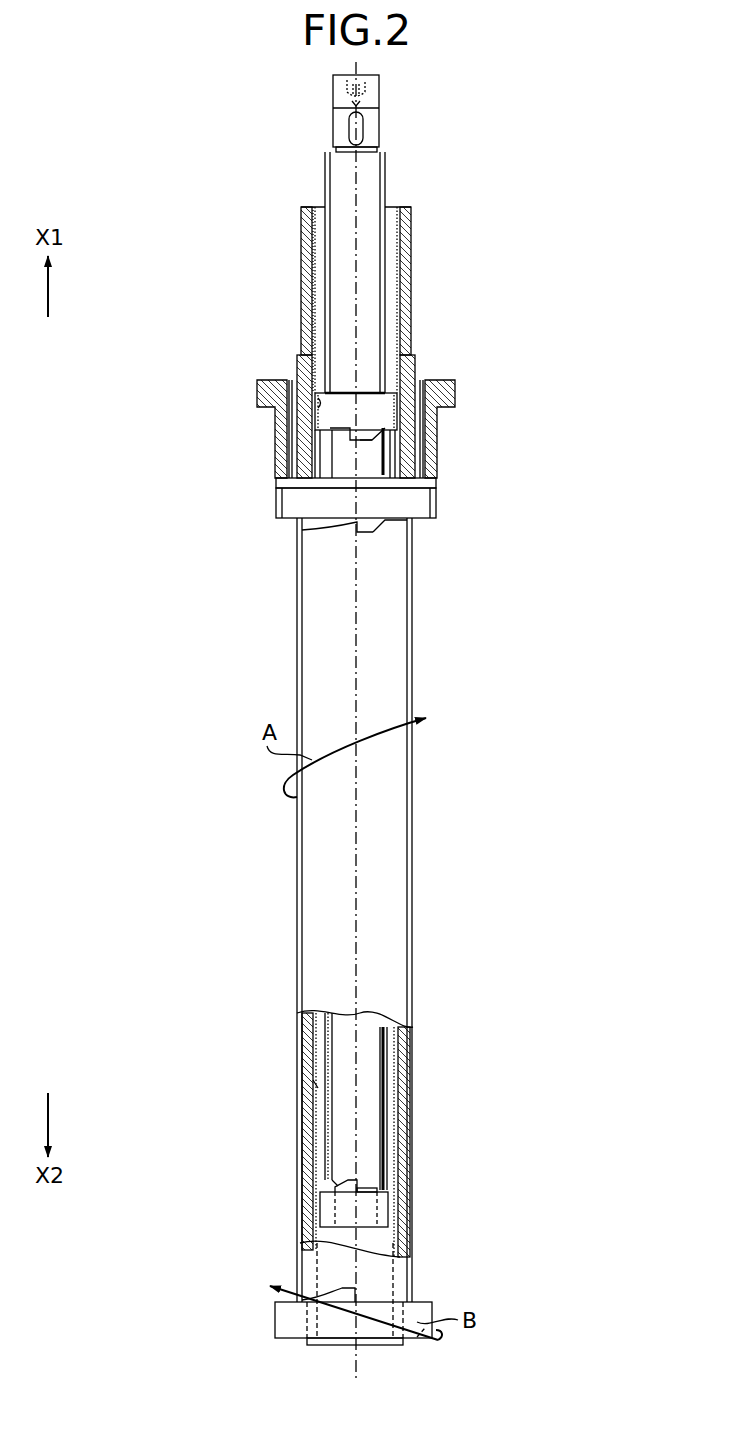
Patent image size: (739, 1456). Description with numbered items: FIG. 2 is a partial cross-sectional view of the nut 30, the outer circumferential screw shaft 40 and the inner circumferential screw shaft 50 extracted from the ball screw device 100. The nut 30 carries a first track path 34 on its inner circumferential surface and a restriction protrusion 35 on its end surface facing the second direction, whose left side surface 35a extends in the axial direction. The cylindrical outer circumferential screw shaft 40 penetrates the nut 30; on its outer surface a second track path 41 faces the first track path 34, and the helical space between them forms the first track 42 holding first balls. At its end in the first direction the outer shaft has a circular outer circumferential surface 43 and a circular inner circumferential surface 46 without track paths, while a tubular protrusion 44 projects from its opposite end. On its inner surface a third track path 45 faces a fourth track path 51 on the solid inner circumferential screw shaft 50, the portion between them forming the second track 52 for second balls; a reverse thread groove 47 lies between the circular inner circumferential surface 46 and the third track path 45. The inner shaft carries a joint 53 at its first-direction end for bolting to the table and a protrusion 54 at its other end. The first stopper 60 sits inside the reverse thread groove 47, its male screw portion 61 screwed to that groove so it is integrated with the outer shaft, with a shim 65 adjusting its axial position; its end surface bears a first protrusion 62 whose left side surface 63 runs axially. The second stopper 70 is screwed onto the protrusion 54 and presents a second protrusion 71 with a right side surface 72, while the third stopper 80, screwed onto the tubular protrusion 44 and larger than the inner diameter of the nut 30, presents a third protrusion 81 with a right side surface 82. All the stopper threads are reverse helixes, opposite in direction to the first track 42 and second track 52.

The ball screw device 100 is at (562, 142).
The joint 53 is at (372, 122).
The circular outer circumferential surface 43 is at (411, 243).
The circular inner circumferential surface 46 is at (315, 278).
The first stopper 60 is at (372, 386).
The reverse thread groove 47 is at (315, 392).
The first track 42 is at (291, 418).
The first track path 34 is at (292, 452).
The left side surface 63 is at (357, 428).
The male screw portion 61 is at (430, 413).
The shim 65 is at (437, 435).
The first protrusion 62 is at (372, 445).
The nut 30 is at (444, 506).
The left side surface 35a is at (355, 528).
The restriction protrusion 35 is at (383, 528).
The second track path 41 is at (297, 588).
The outer circumferential screw shaft 40 is at (354, 910).
The fourth track path 51 is at (327, 1040).
The inner circumferential screw shaft 50 is at (380, 1043).
The third track path 45 is at (395, 1078).
The second track 52 is at (316, 1086).
The second protrusion 71 is at (334, 1181).
The right side surface 72 is at (357, 1182).
The second stopper 70 is at (326, 1210).
The protrusion 54 is at (390, 1210).
The third protrusion 81 is at (352, 1283).
The right side surface 82 is at (357, 1293).
The third stopper 80 is at (271, 1317).
The tubular protrusion 44 is at (417, 1337).